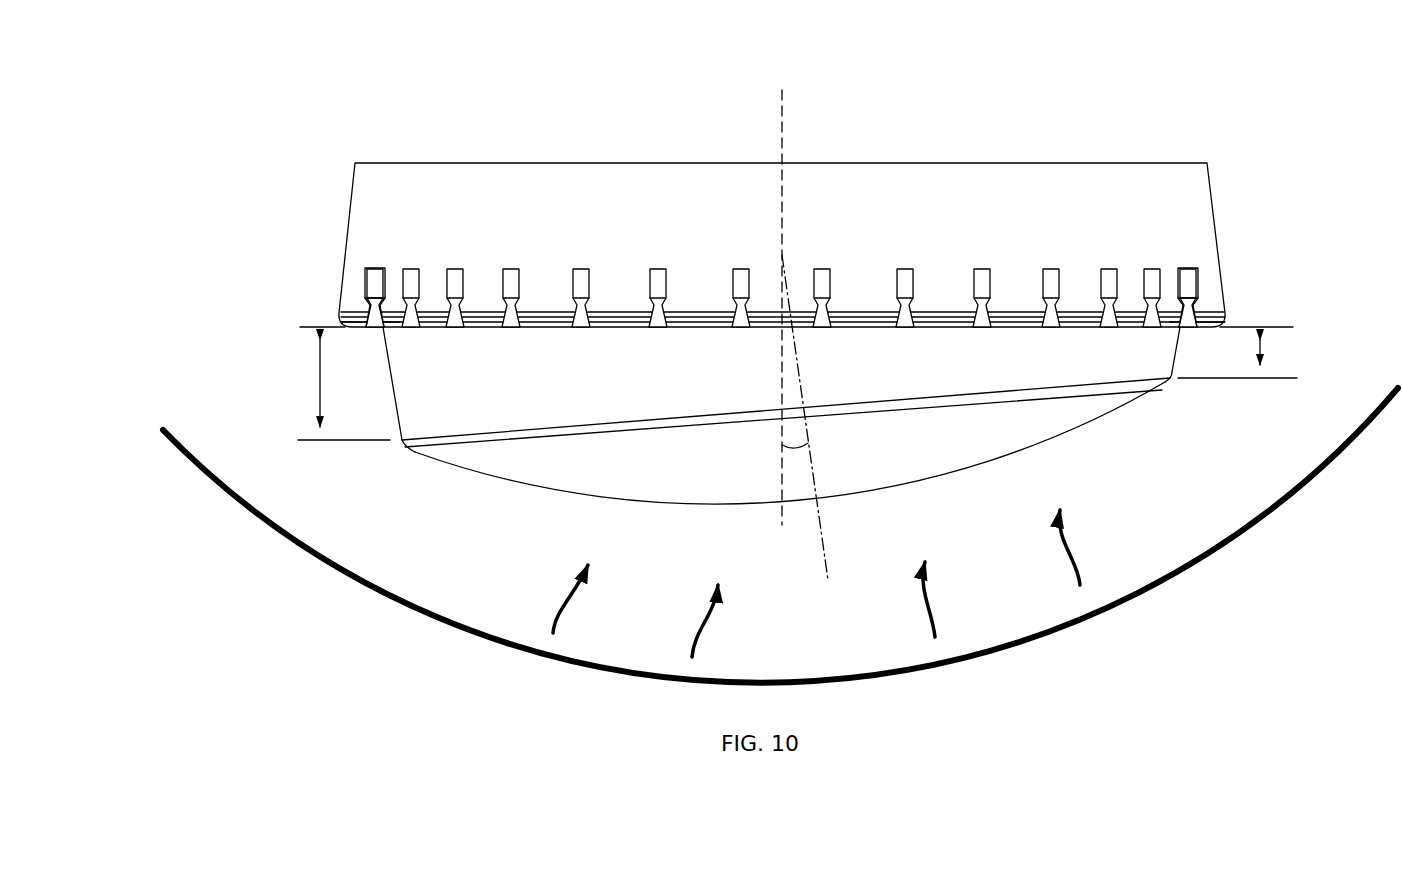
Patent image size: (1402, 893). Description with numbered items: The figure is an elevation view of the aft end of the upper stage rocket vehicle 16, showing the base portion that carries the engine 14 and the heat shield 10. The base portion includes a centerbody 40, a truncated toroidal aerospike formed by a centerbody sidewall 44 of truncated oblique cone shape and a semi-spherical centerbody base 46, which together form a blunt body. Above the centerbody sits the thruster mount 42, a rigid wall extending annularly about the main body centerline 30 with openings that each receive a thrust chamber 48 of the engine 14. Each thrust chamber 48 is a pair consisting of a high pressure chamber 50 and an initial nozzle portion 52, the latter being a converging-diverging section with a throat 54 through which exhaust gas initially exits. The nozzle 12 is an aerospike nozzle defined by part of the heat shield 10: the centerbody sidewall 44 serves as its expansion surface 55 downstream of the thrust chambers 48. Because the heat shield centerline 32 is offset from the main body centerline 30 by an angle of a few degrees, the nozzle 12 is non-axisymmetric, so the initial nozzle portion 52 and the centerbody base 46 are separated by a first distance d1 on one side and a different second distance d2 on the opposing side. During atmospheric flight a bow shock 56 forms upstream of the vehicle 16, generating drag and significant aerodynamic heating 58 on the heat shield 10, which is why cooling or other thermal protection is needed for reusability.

The heat shield 10 is at (383, 488).
The nozzle 12 is at (238, 302).
The engine 14 is at (185, 370).
The vehicle 16 is at (327, 97).
The main body centerline 30 is at (782, 132).
The heat shield centerline 32 is at (830, 548).
The centerbody 40 is at (475, 495).
The thruster mount 42 is at (675, 328).
The centerbody sidewall 44 is at (388, 390).
The centerbody base 46 is at (540, 490).
The thrust chamber 48 is at (377, 258).
The high pressure chamber 50 is at (368, 283).
The initial nozzle portion 52 is at (367, 321).
The throat 54 is at (367, 301).
The expansion surface 55 is at (395, 430).
The bow shock 56 is at (1320, 490).
The aerodynamic heating 58 is at (558, 612).
The first distance d1 is at (341, 383).
The second distance d2 is at (1262, 352).